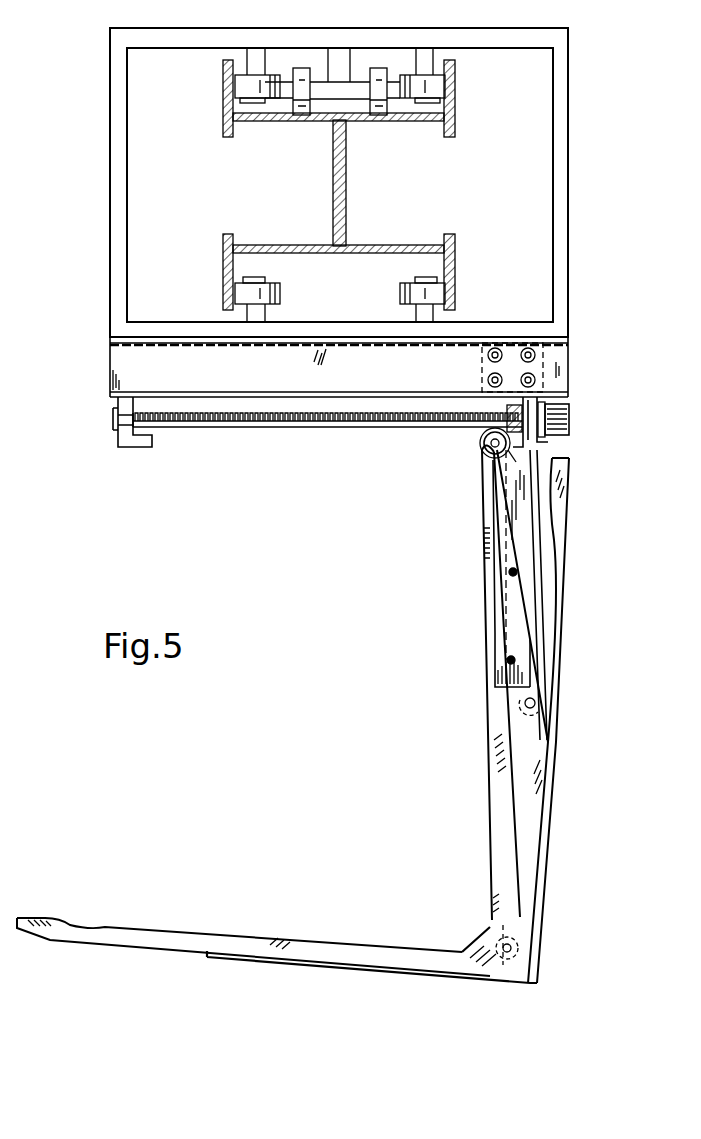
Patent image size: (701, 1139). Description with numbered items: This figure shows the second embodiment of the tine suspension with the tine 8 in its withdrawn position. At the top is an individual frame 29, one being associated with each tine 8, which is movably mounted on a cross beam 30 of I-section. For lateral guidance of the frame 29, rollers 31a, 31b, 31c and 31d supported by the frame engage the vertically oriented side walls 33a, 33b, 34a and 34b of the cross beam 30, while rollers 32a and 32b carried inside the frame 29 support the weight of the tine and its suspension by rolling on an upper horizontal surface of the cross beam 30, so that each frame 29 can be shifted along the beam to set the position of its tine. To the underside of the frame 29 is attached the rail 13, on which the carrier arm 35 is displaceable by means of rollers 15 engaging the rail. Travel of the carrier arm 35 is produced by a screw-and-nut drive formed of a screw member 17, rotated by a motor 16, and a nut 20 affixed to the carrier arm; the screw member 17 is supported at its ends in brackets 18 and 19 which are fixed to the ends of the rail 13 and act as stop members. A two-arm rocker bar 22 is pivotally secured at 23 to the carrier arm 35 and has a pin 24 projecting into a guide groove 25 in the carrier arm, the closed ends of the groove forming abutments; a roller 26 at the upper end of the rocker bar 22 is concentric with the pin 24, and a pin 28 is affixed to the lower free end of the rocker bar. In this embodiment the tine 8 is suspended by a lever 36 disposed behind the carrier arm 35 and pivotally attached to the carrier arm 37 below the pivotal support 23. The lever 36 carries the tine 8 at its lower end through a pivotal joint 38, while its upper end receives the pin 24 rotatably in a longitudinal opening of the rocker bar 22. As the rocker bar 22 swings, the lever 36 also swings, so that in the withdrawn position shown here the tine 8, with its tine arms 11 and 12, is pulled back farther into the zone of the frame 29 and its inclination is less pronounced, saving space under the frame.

The tine 8 is at (449, 938).
The tine arm 11 is at (145, 928).
The tine arm 12 is at (552, 622).
The rail 13 is at (222, 370).
The rollers 15 is at (528, 347).
The motor 16 is at (566, 428).
The screw member 17 is at (300, 427).
The bracket 18 is at (139, 443).
The bracket 19 is at (516, 458).
The nut 20 is at (507, 412).
The rocker bar 22 is at (517, 628).
The pivotal support 23 is at (510, 582).
The pin 24 is at (484, 446).
The guide groove 25 is at (520, 449).
The roller 26 is at (488, 455).
The pin 28 is at (525, 705).
The frame 29 is at (110, 213).
The cross beam 30 is at (333, 213).
The roller 31a is at (280, 297).
The roller 31b is at (400, 292).
The roller 31c is at (243, 124).
The roller 31d is at (437, 98).
The roller 32a is at (301, 120).
The roller 32b is at (383, 115).
The side wall 33a is at (223, 268).
The side wall 33b is at (455, 258).
The side wall 34a is at (223, 102).
The side wall 34b is at (455, 98).
The carrier arm 35 is at (527, 533).
The lever 36 is at (491, 828).
The carrier arm 37 is at (508, 662).
The pivotal joint 38 is at (512, 948).